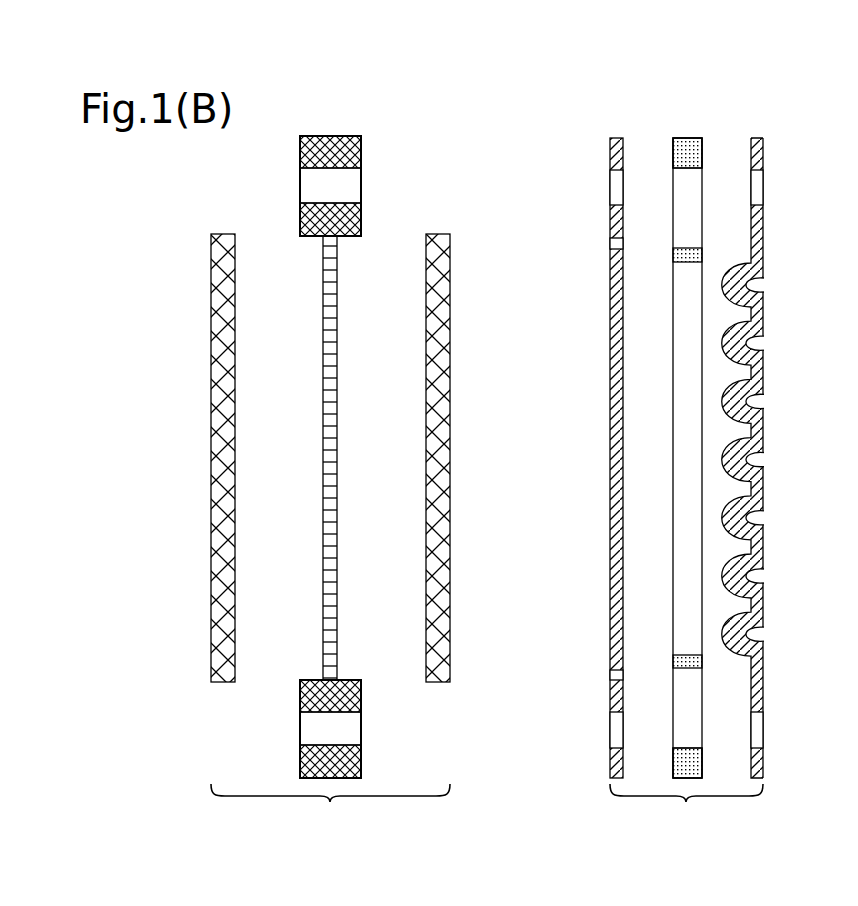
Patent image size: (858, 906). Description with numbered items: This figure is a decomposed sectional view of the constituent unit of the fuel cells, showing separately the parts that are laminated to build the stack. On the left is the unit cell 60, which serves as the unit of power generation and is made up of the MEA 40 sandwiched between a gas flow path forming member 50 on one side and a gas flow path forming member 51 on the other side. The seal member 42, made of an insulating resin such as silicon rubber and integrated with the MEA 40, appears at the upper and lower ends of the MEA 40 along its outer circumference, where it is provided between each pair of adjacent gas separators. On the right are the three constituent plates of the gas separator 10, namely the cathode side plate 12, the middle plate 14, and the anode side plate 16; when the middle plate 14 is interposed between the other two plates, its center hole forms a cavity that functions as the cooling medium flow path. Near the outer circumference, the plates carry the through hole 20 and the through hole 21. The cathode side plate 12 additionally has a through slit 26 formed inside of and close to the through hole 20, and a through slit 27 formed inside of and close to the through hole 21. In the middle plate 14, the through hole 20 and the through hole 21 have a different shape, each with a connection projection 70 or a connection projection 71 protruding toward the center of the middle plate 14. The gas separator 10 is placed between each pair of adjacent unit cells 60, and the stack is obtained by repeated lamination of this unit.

The gas separator 10 is at (686, 812).
The cathode side plate 12 is at (612, 342).
The middle plate 14 is at (690, 137).
The anode side plate 16 is at (762, 360).
The through hole 20 is at (612, 185).
The through hole 21 is at (612, 725).
The through slit 26 is at (612, 240).
The through slit 27 is at (612, 672).
The MEA 40 is at (337, 400).
The seal member 42 is at (361, 220).
The gas flow path forming member 50 is at (432, 478).
The gas flow path forming member 51 is at (235, 400).
The unit cell 60 is at (330, 812).
The connection projection 70 is at (693, 234).
The connection projection 71 is at (693, 684).